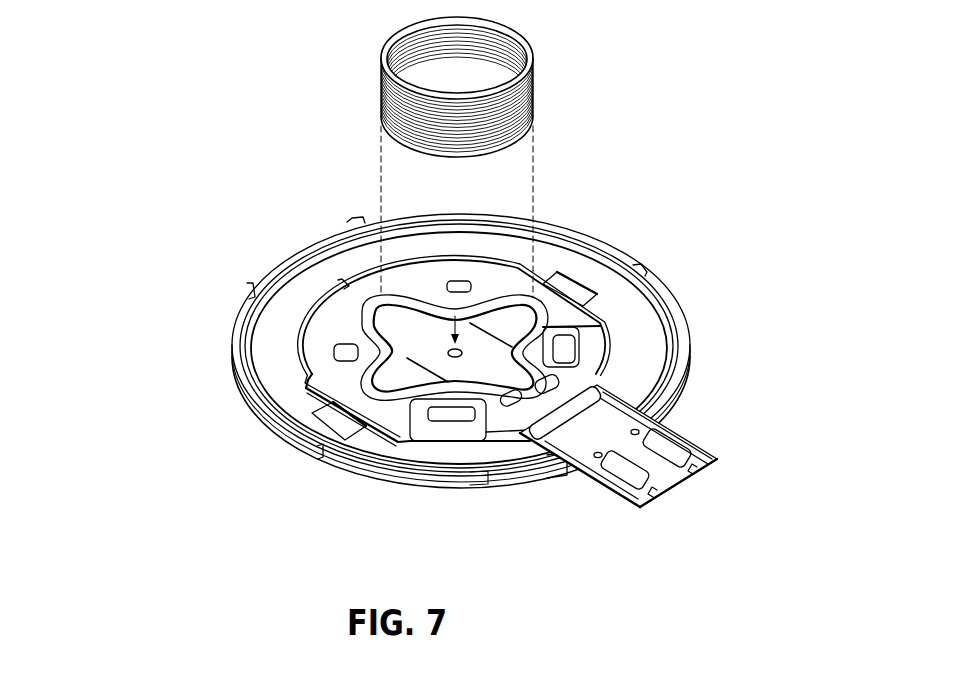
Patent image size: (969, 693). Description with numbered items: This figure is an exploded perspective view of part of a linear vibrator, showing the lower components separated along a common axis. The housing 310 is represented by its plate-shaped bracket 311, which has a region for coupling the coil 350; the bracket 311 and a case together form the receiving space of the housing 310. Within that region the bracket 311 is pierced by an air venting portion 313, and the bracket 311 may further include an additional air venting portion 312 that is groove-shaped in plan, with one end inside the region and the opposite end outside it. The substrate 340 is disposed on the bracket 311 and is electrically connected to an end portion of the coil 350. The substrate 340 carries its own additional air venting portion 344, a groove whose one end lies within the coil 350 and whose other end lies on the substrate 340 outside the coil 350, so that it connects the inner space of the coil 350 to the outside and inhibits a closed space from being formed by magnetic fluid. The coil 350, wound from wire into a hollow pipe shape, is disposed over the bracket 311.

The housing 310 is at (150, 420).
The bracket 311 is at (258, 420).
The additional air venting portion 312 is at (338, 422).
The air venting portion 313 is at (458, 360).
The substrate 340 is at (667, 493).
The additional air venting portion 344 is at (390, 393).
The coil 350 is at (533, 93).